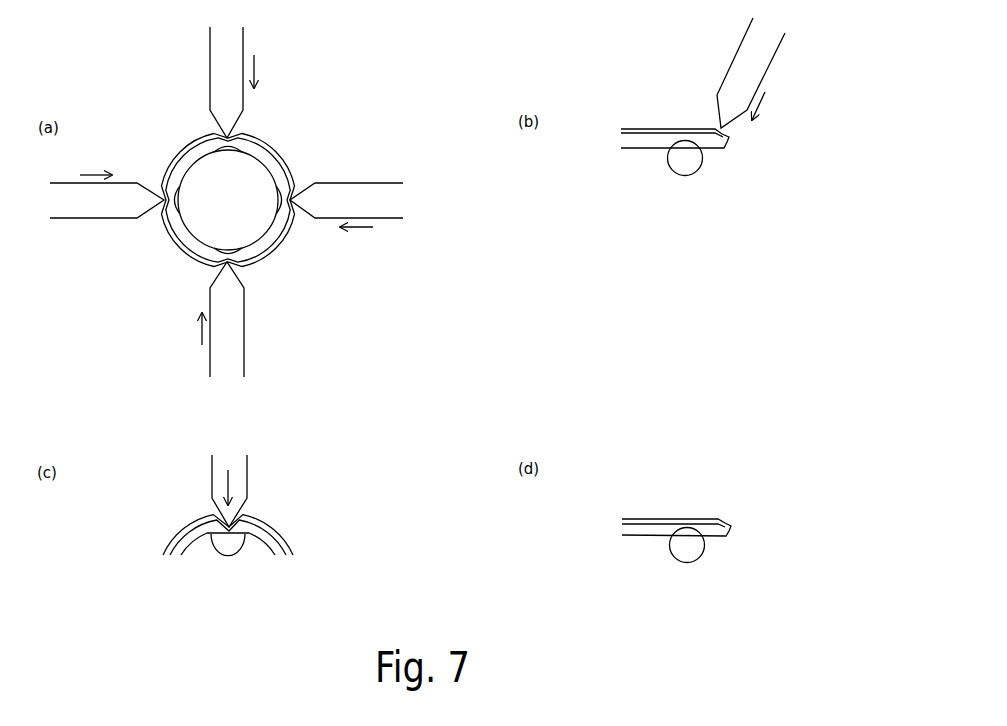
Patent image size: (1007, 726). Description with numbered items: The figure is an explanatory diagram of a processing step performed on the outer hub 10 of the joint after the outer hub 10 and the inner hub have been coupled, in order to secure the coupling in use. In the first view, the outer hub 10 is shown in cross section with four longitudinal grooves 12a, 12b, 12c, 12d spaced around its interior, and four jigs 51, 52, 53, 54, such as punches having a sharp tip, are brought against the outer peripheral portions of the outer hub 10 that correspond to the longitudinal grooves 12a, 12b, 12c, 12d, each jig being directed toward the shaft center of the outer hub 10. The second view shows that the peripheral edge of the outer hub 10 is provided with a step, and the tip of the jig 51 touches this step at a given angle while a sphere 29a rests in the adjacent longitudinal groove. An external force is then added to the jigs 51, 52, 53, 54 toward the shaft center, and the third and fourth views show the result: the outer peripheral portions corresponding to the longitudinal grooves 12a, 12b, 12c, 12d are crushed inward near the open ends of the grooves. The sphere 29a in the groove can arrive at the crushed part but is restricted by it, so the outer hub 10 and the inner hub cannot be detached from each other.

The outer hub 10 is at (270, 133).
The longitudinal groove 12a is at (232, 145).
The longitudinal groove 12b is at (280, 204).
The longitudinal groove 12c is at (217, 250).
The longitudinal groove 12d is at (172, 199).
The sphere 29a is at (689, 168).
The jig 51 is at (214, 40).
The jig 52 is at (384, 193).
The jig 53 is at (244, 326).
The jig 54 is at (72, 210).